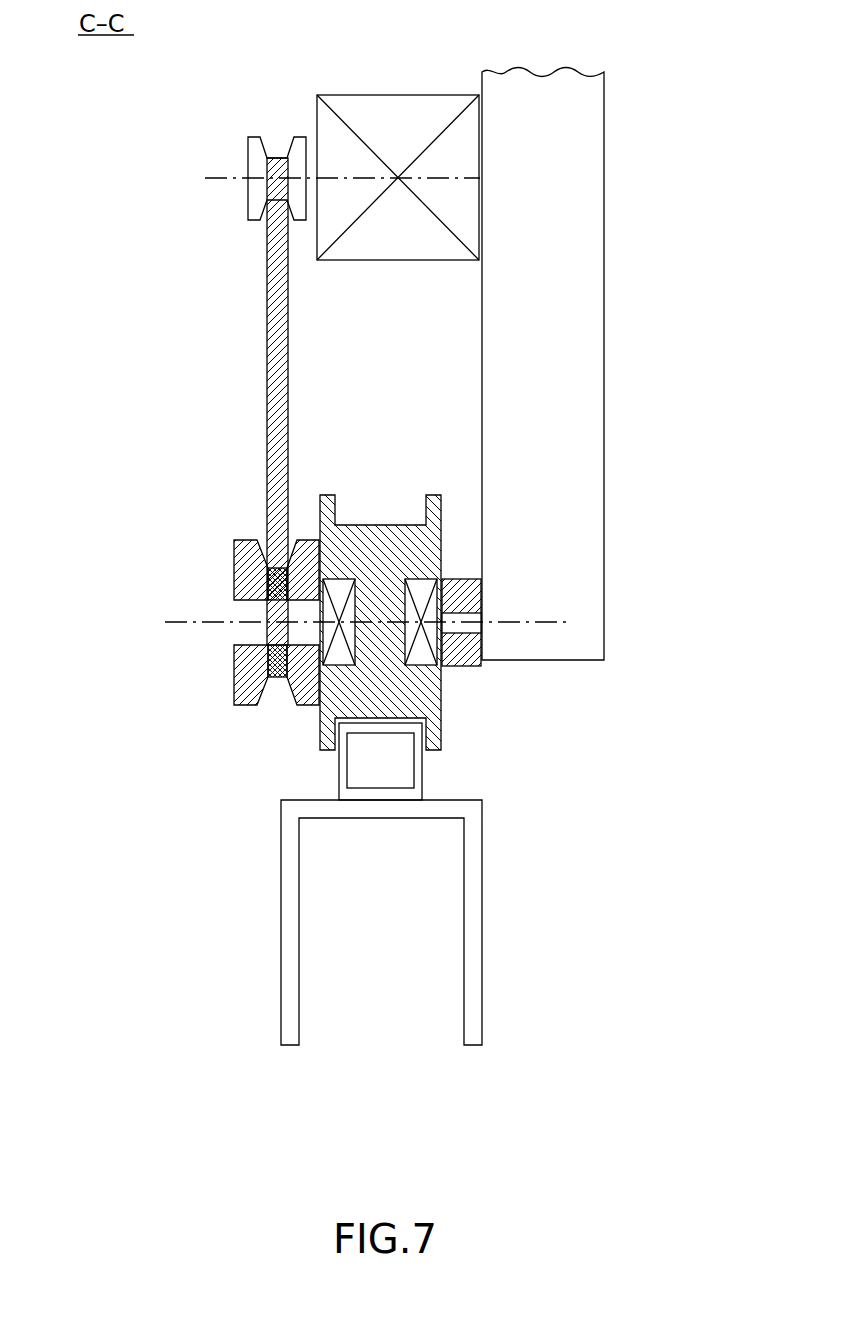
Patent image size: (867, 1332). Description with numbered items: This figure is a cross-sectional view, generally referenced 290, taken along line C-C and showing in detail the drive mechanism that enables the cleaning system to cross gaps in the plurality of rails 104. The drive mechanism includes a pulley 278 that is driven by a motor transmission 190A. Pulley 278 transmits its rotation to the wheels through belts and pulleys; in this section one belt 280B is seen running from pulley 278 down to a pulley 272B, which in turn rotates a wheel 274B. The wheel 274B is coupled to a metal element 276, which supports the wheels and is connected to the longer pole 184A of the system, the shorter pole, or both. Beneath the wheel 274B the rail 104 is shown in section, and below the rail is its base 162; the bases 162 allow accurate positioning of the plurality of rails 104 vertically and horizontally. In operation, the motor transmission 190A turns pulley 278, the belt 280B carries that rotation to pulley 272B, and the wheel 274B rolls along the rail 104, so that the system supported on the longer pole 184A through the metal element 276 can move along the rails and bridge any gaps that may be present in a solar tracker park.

The pulley 278 is at (247, 157).
The belt 280B is at (267, 368).
The motor transmission 190A is at (387, 240).
The longer pole 184A is at (588, 393).
The pulley 272B is at (233, 566).
The wheel 274B is at (381, 540).
The metal element 276 is at (458, 657).
The cross-sectional view of drive mechanism 290 is at (170, 783).
The rails 104 is at (422, 783).
The base 162 is at (473, 857).